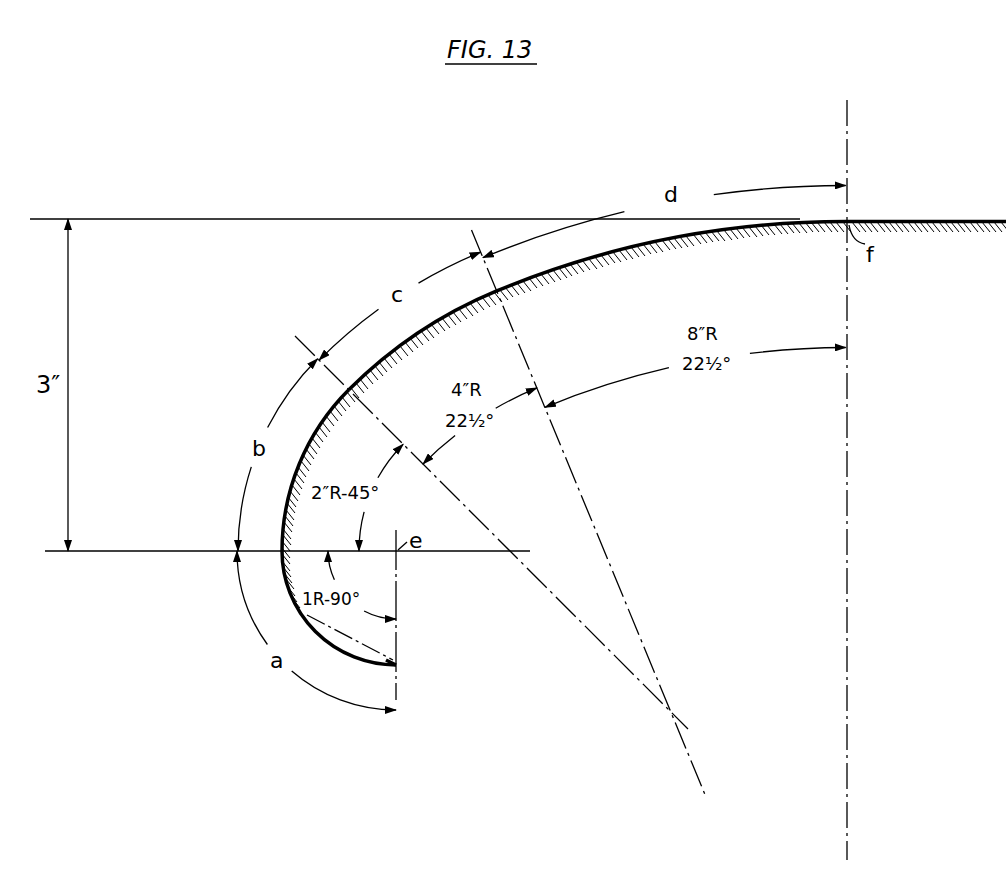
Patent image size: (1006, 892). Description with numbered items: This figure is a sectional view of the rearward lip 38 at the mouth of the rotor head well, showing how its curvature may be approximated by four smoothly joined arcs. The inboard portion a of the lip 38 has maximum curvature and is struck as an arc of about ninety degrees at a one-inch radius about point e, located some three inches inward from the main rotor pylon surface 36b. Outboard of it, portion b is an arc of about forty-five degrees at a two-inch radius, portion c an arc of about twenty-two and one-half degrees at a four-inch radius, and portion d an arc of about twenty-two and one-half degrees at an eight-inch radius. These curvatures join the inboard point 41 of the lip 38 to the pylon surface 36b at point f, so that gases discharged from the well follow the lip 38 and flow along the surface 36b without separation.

The main rotor pylon surface 36b is at (936, 225).
The rearward lip 38 is at (283, 551).
The inboard point 41 is at (402, 669).